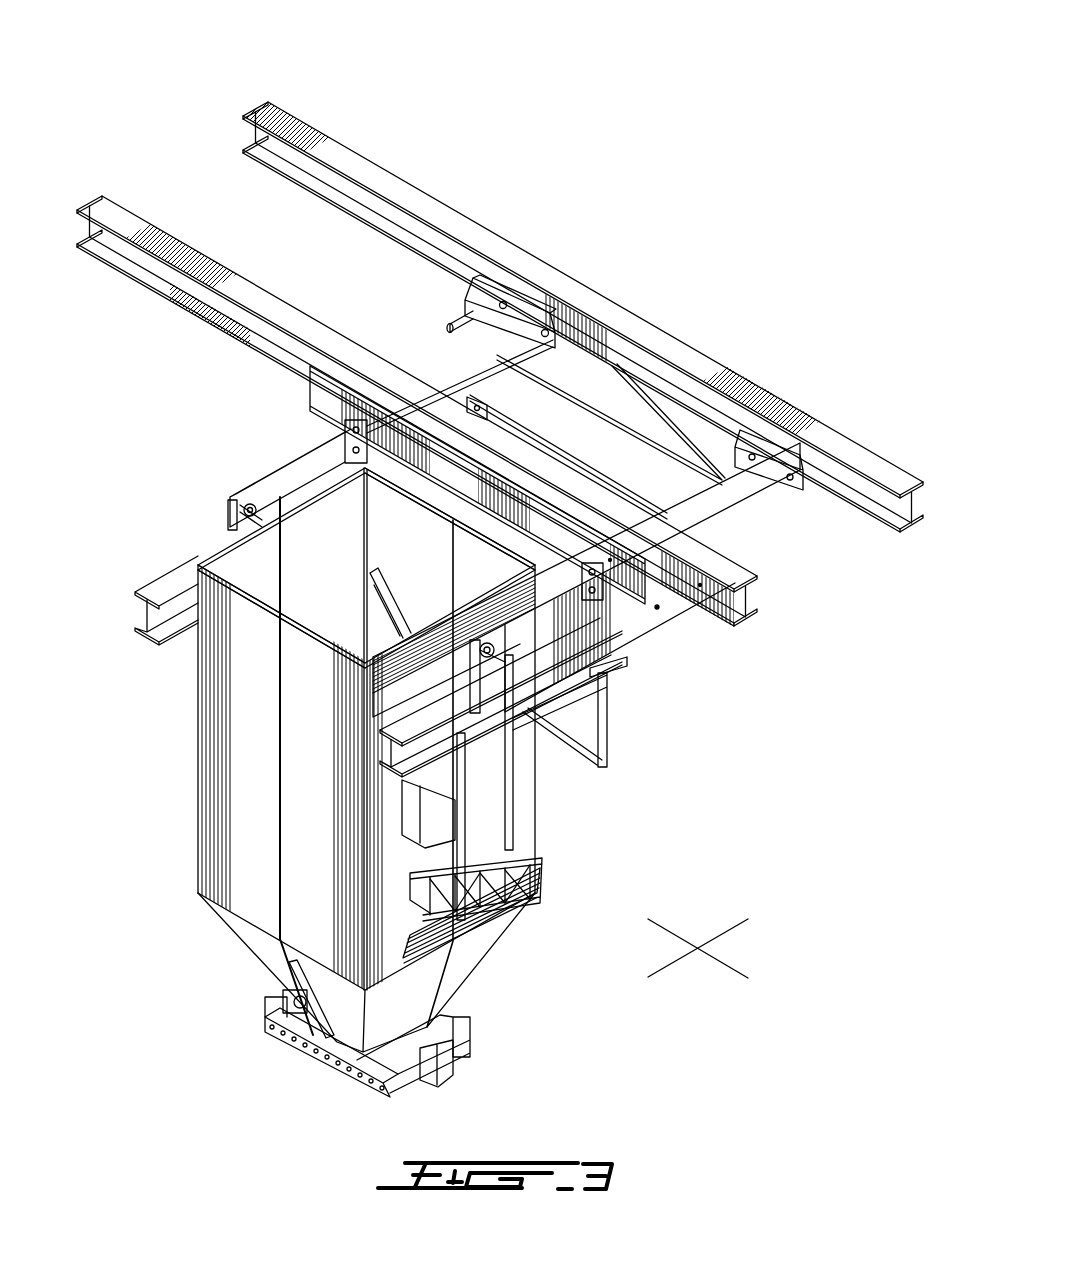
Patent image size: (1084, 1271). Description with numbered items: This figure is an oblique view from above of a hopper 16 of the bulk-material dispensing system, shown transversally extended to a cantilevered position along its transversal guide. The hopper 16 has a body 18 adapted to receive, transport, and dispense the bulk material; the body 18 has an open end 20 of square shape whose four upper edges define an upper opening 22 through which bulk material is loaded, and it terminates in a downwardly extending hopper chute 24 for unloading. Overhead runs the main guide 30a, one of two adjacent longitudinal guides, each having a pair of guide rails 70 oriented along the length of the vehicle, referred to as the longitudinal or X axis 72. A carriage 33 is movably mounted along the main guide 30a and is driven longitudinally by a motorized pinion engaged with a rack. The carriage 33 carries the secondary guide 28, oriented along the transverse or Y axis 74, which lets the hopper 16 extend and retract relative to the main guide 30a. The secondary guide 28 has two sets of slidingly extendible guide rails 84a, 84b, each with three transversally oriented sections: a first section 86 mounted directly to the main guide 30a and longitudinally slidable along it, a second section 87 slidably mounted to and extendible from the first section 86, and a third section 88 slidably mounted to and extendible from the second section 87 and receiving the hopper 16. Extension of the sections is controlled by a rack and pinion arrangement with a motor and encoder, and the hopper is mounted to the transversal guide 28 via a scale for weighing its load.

The hopper 16 is at (256, 548).
The body 18 is at (232, 800).
The open end 20 is at (240, 575).
The upper opening 22 is at (336, 559).
The hopper chute 24 is at (435, 996).
The secondary guide 28 is at (713, 710).
The main guide 30a is at (382, 158).
The carriage 33 is at (718, 470).
The guide rails 70 is at (153, 247).
The longitudinal axis 72 is at (665, 920).
The transverse axis 74 is at (733, 930).
The guide rail 84a is at (480, 725).
The guide rail 84b is at (283, 472).
The first section 86 is at (750, 505).
The second section 87 is at (567, 660).
The third section 88 is at (402, 728).